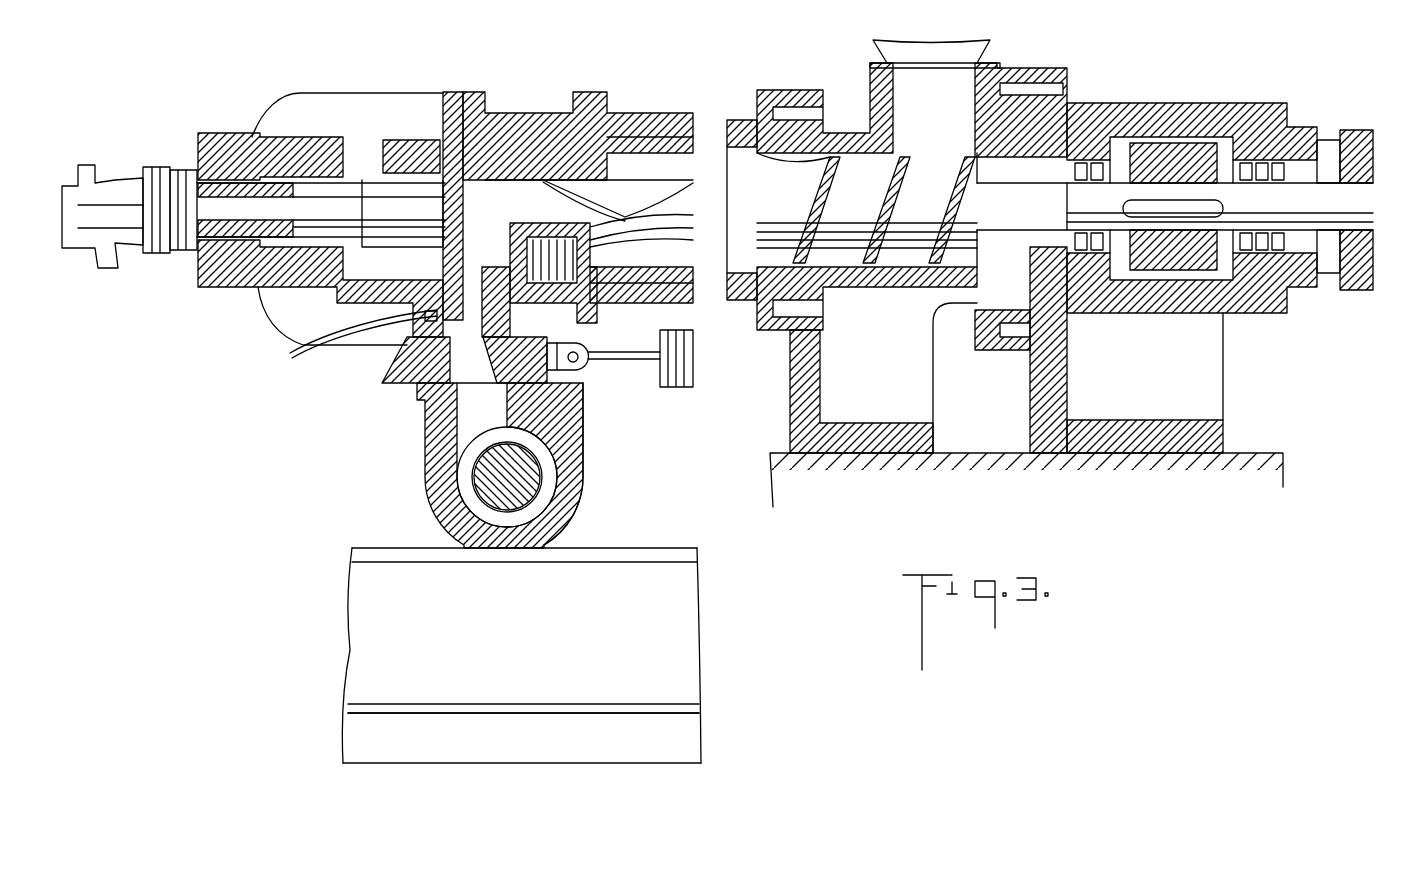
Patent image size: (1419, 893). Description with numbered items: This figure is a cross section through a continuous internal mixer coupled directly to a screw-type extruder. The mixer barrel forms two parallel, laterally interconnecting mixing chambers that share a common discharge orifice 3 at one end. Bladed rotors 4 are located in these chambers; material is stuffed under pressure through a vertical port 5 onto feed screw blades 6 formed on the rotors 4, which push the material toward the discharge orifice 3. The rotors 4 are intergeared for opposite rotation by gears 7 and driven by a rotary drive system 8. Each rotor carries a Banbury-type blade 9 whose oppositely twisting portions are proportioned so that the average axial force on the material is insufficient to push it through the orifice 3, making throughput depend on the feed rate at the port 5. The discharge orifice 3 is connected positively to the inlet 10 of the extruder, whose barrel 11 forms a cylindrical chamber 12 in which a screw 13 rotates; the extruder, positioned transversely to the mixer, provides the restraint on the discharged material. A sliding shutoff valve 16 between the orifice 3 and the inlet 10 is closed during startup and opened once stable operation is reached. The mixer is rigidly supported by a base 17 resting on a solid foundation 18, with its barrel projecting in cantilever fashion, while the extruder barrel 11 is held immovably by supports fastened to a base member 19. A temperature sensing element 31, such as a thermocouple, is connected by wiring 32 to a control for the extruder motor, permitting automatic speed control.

The discharge orifice 3 is at (442, 253).
The bladed rotors 4 is at (660, 230).
The vertical port 5 is at (897, 93).
The feed screw blades 6 is at (893, 205).
The gears 7 is at (1173, 150).
The rotary drive system 8 is at (1360, 130).
The blade 9 is at (647, 198).
The inlet 10 is at (430, 430).
The barrel 11 is at (583, 465).
The mixing chamber 12 is at (467, 500).
The screw 13 is at (540, 490).
The shutoff valve 16 is at (543, 347).
The base 17 is at (800, 386).
The foundation 18 is at (353, 638).
The base member 19 is at (368, 757).
The temperature sensing element 31 is at (413, 327).
The wiring 32 is at (322, 340).